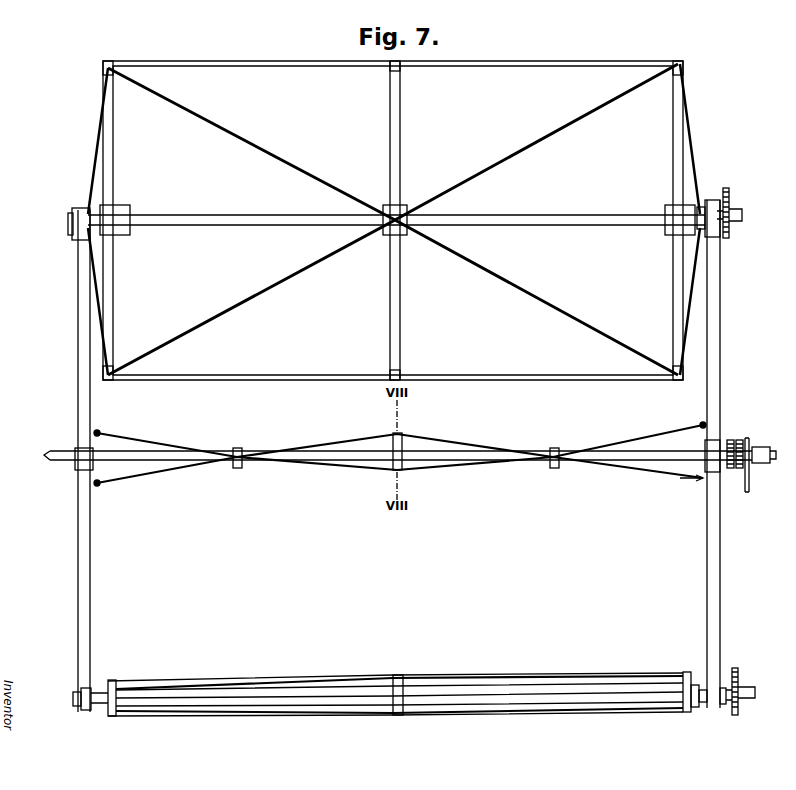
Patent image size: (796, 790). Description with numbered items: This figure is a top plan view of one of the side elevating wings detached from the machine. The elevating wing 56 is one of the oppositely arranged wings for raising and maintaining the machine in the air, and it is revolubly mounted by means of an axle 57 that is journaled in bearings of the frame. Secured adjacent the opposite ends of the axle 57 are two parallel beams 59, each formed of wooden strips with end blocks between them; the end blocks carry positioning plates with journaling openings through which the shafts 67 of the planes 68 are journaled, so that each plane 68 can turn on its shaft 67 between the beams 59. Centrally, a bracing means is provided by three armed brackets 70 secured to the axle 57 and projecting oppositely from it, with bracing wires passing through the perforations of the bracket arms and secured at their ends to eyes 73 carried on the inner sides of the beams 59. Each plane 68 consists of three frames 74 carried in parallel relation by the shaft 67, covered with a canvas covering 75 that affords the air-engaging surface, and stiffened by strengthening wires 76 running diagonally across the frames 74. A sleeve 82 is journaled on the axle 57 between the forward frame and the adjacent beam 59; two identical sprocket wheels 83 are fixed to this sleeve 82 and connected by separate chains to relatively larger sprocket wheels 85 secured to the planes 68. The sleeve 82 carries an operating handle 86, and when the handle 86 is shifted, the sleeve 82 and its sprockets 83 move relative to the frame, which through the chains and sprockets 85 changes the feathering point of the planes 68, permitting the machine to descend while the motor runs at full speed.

The elevating wing 56 is at (410, 449).
The axle 57 is at (467, 458).
The parallel beams 59 is at (100, 210).
The shaft 67 is at (741, 213).
The plane 68 is at (400, 390).
The three armed bracket 70 is at (238, 467).
The eye 73 is at (703, 425).
The frame 74 is at (113, 300).
The canvas covering 75 is at (251, 221).
The strengthening wire 76 is at (502, 152).
The sleeve 82 is at (742, 452).
The sprocket wheel 83 is at (730, 440).
The sprocket wheel 85 is at (722, 170).
The operating handle 86 is at (751, 480).